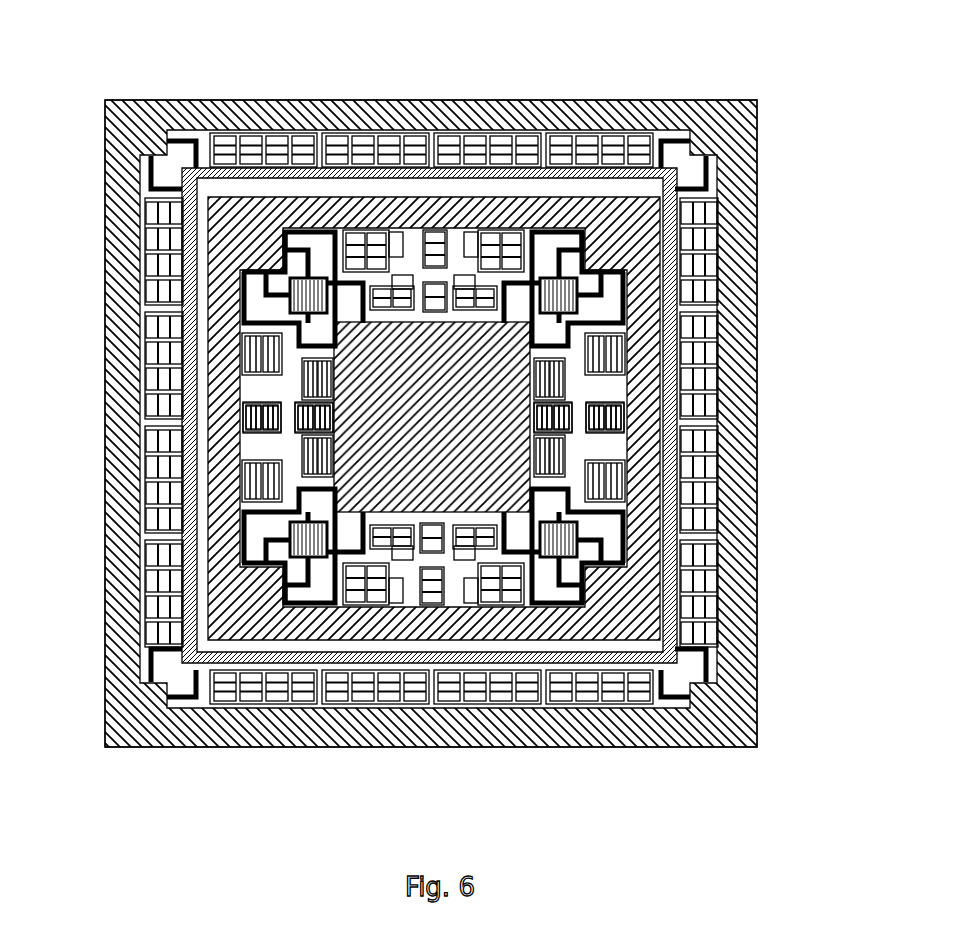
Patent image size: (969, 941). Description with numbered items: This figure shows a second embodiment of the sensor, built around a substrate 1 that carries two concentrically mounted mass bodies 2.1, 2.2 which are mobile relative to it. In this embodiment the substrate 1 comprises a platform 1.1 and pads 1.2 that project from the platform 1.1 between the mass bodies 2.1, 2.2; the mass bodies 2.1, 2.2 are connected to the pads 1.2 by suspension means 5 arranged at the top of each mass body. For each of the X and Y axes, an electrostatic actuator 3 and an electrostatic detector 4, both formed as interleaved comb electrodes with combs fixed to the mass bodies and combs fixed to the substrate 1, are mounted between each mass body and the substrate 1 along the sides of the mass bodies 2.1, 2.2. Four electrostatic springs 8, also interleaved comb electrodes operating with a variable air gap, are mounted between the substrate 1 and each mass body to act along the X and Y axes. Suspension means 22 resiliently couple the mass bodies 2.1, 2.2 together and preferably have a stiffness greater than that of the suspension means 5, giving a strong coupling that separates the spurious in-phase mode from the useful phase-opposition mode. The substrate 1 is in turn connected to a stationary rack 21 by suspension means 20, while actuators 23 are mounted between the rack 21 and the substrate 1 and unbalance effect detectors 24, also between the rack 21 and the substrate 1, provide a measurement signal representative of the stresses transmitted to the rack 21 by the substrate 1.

The substrate 1 is at (660, 742).
The platform 1.1 is at (215, 335).
The pads 1.2 is at (262, 290).
The mass body 2.1 is at (400, 335).
The mass body 2.2 is at (248, 172).
The electrostatic actuator 3 is at (505, 236).
The electrostatic detector 4 is at (437, 235).
The suspension means 5 is at (265, 540).
The electrostatic springs 8 is at (355, 236).
The suspension means 20 is at (190, 135).
The stationary rack 21 is at (759, 575).
The suspension means 22 is at (298, 232).
The actuators 23 is at (566, 290).
The unbalance effect detectors 24 is at (475, 140).